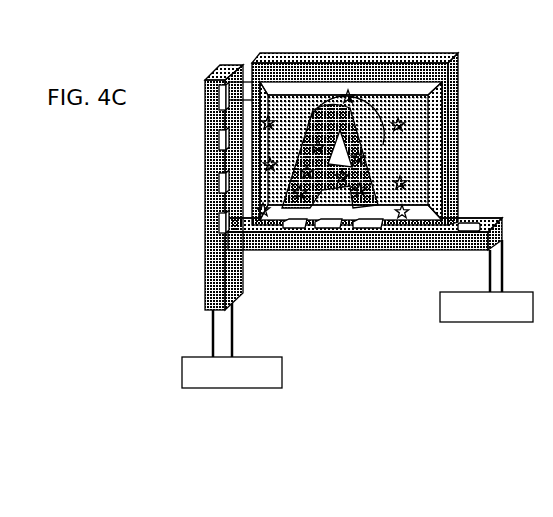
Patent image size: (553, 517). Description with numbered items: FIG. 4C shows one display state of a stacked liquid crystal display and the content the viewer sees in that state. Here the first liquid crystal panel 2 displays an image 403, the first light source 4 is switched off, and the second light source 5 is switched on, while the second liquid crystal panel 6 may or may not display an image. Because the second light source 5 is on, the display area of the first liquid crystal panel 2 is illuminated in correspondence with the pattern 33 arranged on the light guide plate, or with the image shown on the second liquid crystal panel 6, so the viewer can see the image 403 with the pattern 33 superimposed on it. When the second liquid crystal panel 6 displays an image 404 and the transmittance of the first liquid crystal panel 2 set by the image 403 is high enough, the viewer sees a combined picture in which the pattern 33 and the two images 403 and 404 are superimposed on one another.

The first liquid crystal panel 2 is at (438, 213).
The first light source 4 is at (205, 84).
The second light source 5 is at (385, 257).
The second liquid crystal panel 6 is at (383, 124).
The pattern 33 is at (377, 171).
The image 403 is at (405, 122).
The image 404 is at (368, 110).